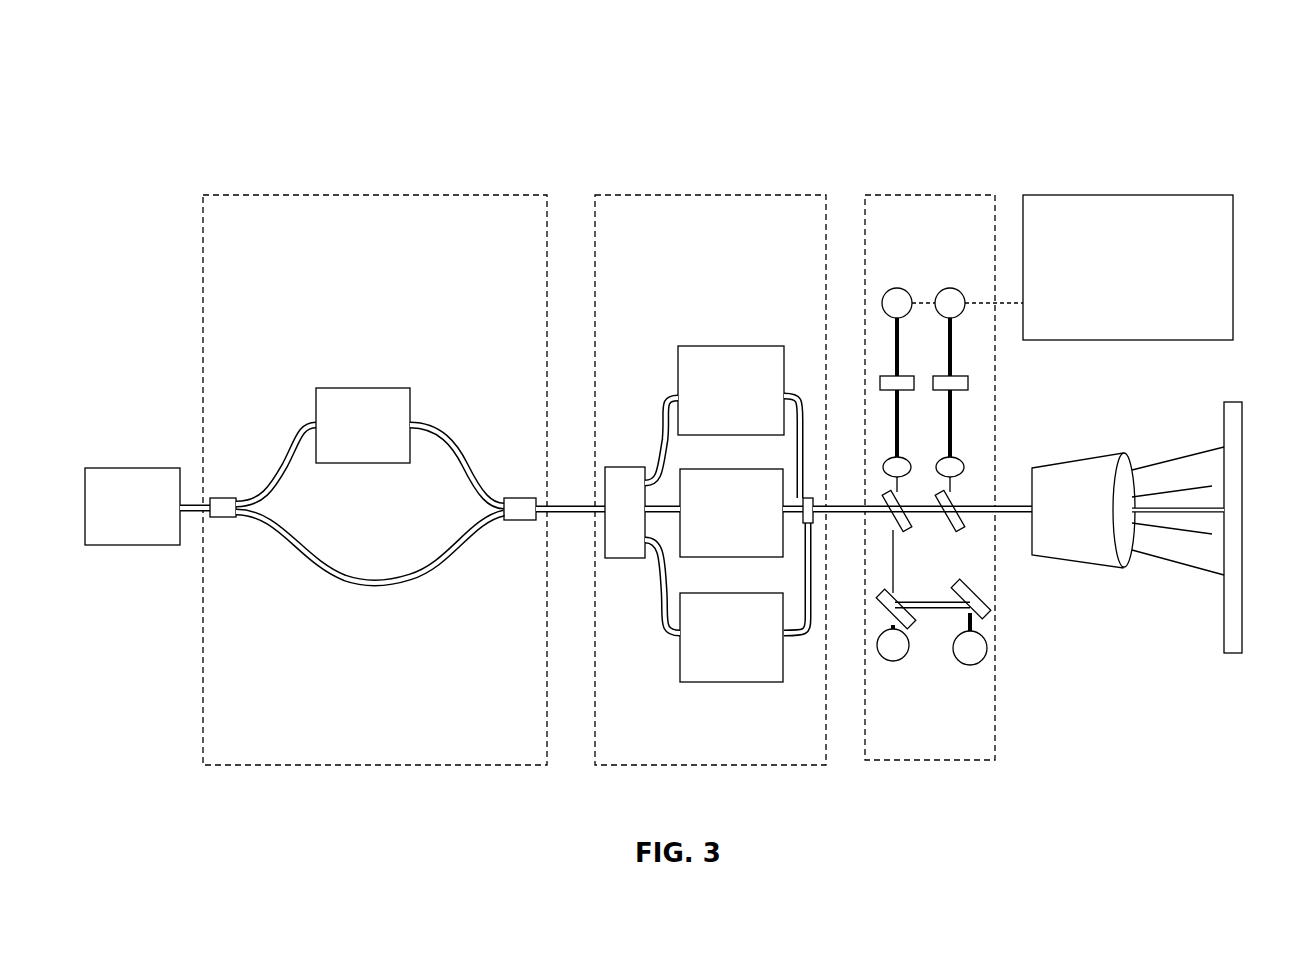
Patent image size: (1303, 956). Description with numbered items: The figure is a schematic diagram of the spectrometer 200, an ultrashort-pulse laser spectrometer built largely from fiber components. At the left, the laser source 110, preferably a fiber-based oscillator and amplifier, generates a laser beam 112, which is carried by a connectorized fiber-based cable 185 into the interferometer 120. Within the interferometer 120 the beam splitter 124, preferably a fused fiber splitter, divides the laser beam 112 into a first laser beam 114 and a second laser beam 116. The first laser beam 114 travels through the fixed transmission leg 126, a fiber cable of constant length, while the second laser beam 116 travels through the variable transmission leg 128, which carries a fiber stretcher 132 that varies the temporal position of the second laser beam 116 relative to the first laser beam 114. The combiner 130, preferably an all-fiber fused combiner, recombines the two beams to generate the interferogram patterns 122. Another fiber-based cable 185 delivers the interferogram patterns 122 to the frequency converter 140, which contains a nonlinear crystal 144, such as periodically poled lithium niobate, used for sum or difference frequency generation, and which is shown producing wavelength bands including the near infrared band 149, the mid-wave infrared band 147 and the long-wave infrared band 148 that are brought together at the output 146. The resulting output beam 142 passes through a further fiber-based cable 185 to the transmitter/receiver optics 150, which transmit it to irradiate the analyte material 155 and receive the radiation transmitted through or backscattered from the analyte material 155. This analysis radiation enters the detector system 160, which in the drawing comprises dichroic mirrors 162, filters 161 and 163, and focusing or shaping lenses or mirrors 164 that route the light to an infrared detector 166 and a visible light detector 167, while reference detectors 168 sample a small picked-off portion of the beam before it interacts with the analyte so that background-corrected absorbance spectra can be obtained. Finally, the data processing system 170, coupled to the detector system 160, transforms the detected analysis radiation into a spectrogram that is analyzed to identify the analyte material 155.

The spectrometer 200 is at (203, 83).
The laser source 110 is at (145, 467).
The laser beam 112 is at (200, 513).
The first laser beam 114 is at (352, 580).
The second laser beam 116 is at (290, 425).
The interferometer 120 is at (387, 190).
The interferogram patterns 122 is at (557, 515).
The beam splitter 124 is at (222, 497).
The fixed transmission leg 126 is at (318, 580).
The variable transmission leg 128 is at (280, 466).
The combiner 130 is at (514, 497).
The fiber stretcher 132 is at (352, 388).
The frequency converter 140 is at (745, 190).
The output beam 142 is at (832, 515).
The nonlinear crystal 144 is at (630, 466).
The output 146 is at (803, 497).
The mid-wave infrared band 147 is at (783, 557).
The long-wave infrared band 148 is at (784, 645).
The near infrared band 149 is at (716, 346).
The transmitter/receiver optics 150 is at (1080, 560).
The analyte material 155 is at (1230, 402).
The detector system 160 is at (927, 192).
The filters 161 is at (880, 606).
The dichroic mirrors 162 is at (900, 530).
The filters 163 is at (908, 376).
The focusing/shaping lenses or mirrors 164 is at (907, 457).
The infrared detector 166 is at (900, 288).
The visible light detector 167 is at (955, 288).
The reference detector 168 is at (895, 662).
The data processing system 170 is at (1170, 195).
The connectorized fiber-based cables 185 is at (197, 503).